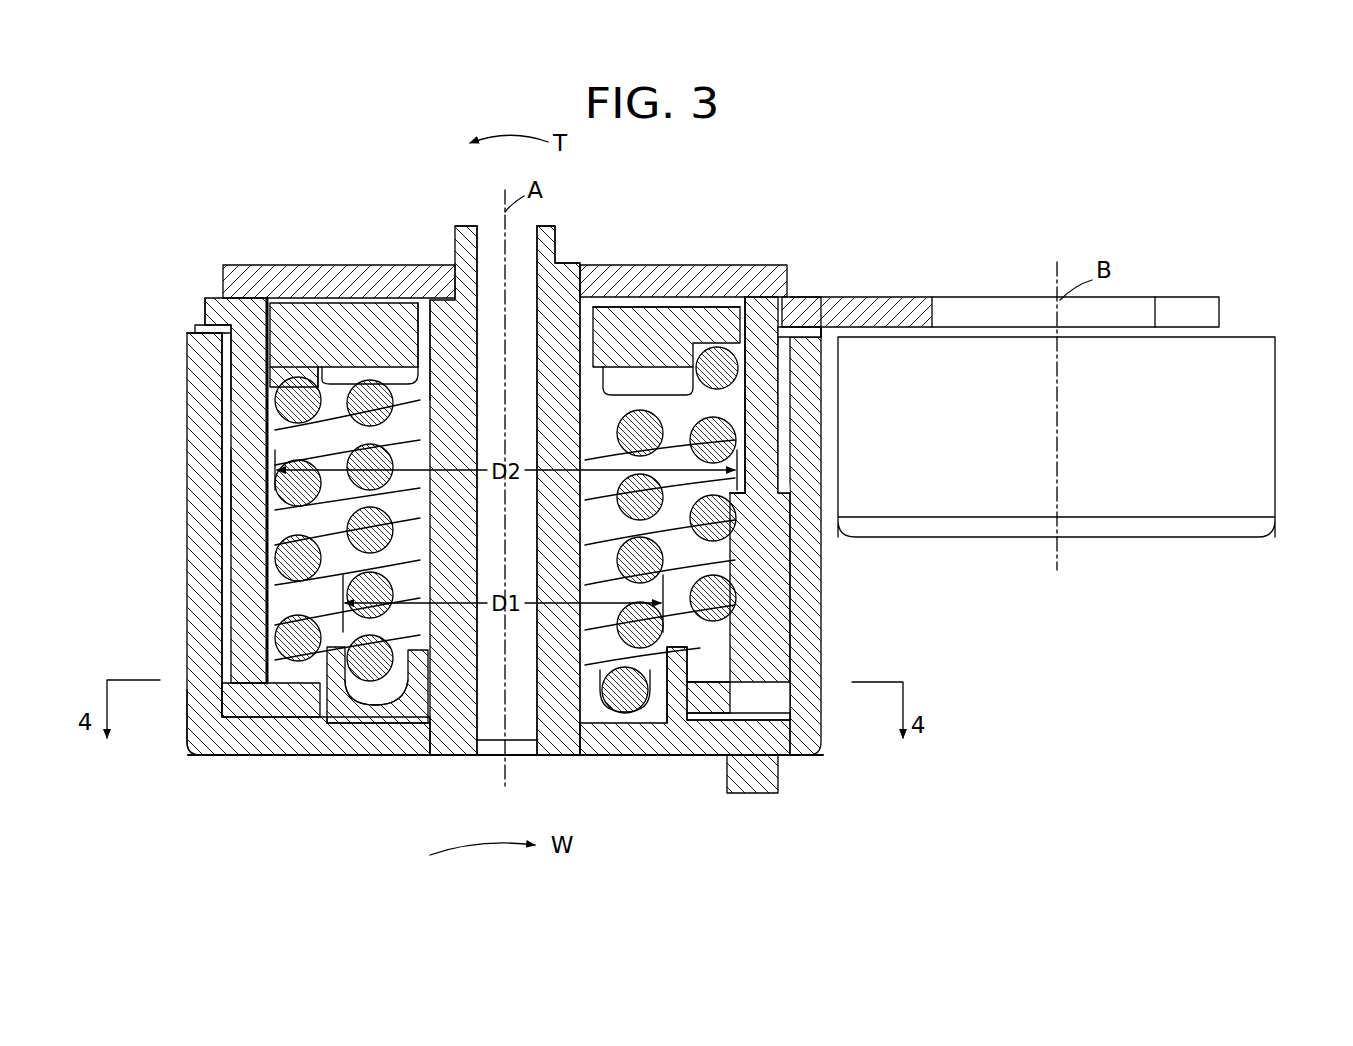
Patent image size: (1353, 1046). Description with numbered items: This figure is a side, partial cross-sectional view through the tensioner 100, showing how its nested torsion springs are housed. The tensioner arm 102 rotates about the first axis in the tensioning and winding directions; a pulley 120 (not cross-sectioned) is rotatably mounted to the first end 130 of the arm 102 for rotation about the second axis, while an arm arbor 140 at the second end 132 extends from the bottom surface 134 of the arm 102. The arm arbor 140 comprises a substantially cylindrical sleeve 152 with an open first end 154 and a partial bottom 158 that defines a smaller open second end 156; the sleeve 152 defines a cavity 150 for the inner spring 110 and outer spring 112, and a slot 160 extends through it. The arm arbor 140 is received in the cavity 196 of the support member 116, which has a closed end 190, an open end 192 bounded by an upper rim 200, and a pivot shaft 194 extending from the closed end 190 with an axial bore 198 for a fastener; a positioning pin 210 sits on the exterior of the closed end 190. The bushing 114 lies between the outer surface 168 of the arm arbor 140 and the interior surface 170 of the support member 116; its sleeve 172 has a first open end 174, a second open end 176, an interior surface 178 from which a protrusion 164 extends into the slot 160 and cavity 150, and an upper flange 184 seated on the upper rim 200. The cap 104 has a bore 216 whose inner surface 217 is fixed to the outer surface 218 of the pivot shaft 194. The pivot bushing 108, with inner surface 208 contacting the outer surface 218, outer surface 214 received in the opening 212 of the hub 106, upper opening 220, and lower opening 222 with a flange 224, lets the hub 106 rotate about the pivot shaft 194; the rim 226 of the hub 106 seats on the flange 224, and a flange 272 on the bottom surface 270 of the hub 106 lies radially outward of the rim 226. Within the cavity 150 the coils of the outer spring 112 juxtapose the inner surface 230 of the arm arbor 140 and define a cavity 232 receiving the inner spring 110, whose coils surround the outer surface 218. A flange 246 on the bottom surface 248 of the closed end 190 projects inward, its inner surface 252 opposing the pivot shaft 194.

The tensioner 100 is at (786, 148).
The tensioner arm 102 is at (950, 300).
The cap 104 is at (330, 282).
The hub 106 is at (680, 285).
The pivot bushing 108 is at (410, 300).
The inner spring 110 is at (232, 505).
The outer spring 112 is at (268, 570).
The bushing 114 is at (805, 402).
The support member 116 is at (377, 737).
The pulley 120 is at (1277, 405).
The first end 130 is at (1185, 300).
The second end 132 is at (245, 330).
The bottom surface 134 is at (205, 328).
The arm arbor 140 is at (243, 384).
The cavity 150 is at (830, 330).
The sleeve 152 is at (243, 412).
The open first end 154 is at (290, 300).
The open second end 156 is at (338, 702).
The partial bottom 158 is at (277, 703).
The slot 160 is at (753, 497).
The protrusion 164 is at (767, 605).
The outer surface 168 is at (265, 449).
The interior surface 170 is at (231, 470).
The sleeve 172 is at (266, 645).
The first open end 174 is at (270, 330).
The second open end 176 is at (223, 690).
The interior surface 178 is at (222, 530).
The upper flange 184 is at (203, 332).
The closed end 190 is at (590, 752).
The open end 192 is at (823, 337).
The pivot shaft 194 is at (568, 285).
The cavity 196 is at (775, 702).
The opening 198 is at (520, 742).
The upper rim 200 is at (815, 328).
The inner surface 208 is at (412, 372).
The positioning pin 210 is at (770, 775).
The opening 212 is at (605, 340).
The outer surface 214 is at (405, 340).
The bore 216 is at (455, 240).
The inner surface 217 is at (425, 300).
The outer surface 218 is at (583, 495).
The upper opening 220 is at (440, 290).
The lower opening 222 is at (478, 458).
The flange 224 is at (652, 438).
The rim 226 is at (717, 345).
The inner surface 230 is at (268, 660).
The cavity 232 is at (745, 490).
The flange 246 is at (677, 693).
The bottom surface 248 is at (742, 705).
The inner surface 252 is at (393, 720).
The bottom surface 270 is at (648, 305).
The flange 272 is at (330, 380).